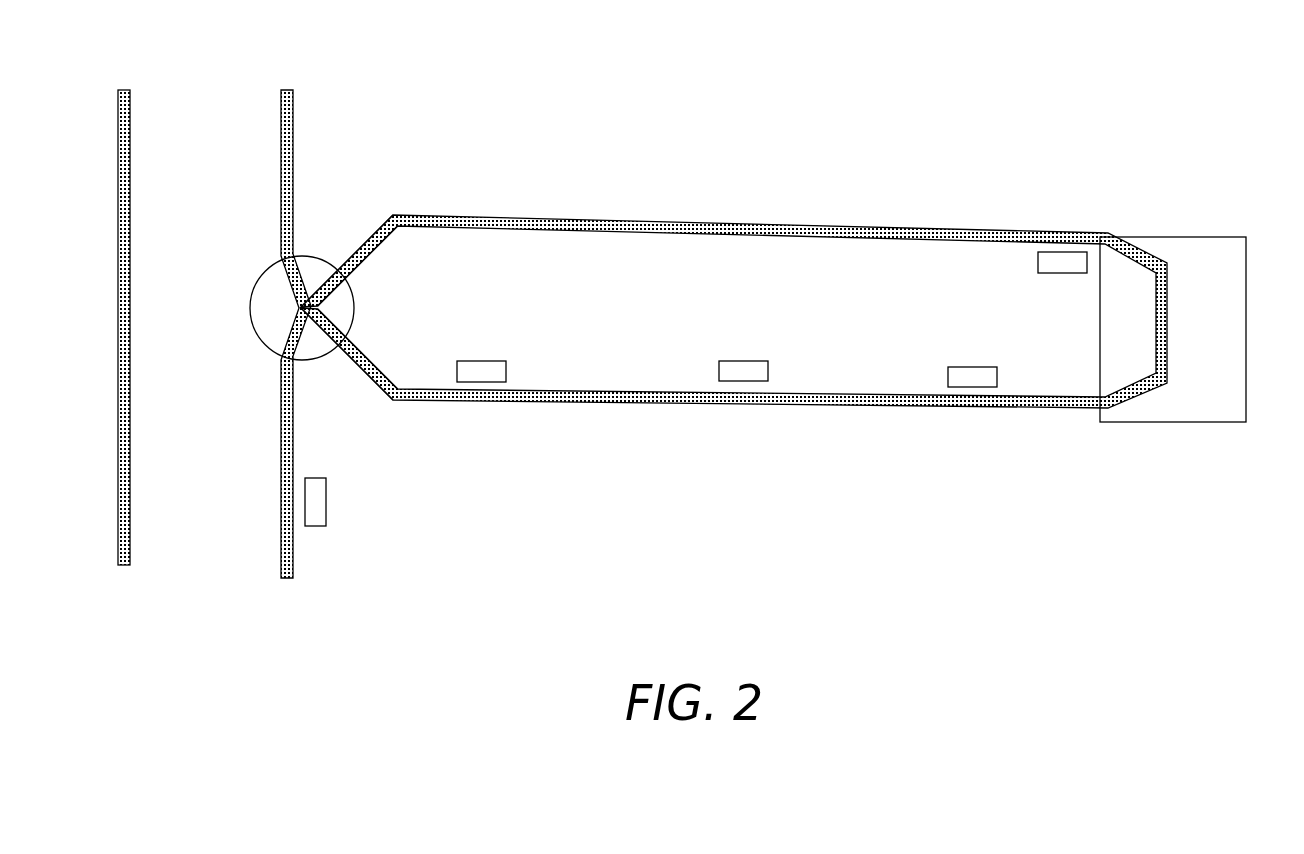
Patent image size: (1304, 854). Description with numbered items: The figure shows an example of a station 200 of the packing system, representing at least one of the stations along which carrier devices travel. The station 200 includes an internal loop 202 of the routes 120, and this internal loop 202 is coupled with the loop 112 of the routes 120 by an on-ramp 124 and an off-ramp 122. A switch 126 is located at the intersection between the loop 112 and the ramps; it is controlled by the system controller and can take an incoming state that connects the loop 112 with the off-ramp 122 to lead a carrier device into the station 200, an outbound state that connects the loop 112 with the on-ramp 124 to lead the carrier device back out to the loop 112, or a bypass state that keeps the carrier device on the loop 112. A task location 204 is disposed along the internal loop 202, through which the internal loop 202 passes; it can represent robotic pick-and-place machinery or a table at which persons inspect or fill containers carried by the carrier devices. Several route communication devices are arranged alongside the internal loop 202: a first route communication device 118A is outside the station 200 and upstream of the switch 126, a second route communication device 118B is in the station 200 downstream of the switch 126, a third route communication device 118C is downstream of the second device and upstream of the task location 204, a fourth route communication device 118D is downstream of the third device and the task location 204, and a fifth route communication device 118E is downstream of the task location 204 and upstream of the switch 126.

The station 200 is at (1141, 156).
The loop 112 is at (300, 72).
The routes 120 is at (118, 462).
The switch 126 is at (250, 308).
The internal loop 202 is at (713, 233).
The on-ramp 124 is at (372, 237).
The off-ramp 122 is at (363, 367).
The task location 204 is at (1170, 422).
The first route communication device 118A is at (326, 502).
The second route communication device 118B is at (483, 361).
The third route communication device 118C is at (744, 361).
The fourth route communication device 118D is at (973, 367).
The fifth route communication device 118E is at (1063, 275).